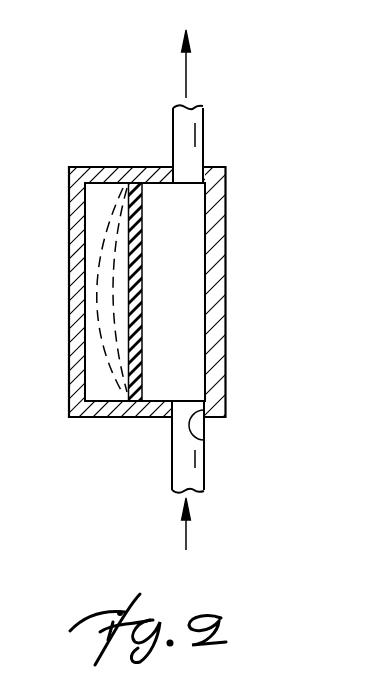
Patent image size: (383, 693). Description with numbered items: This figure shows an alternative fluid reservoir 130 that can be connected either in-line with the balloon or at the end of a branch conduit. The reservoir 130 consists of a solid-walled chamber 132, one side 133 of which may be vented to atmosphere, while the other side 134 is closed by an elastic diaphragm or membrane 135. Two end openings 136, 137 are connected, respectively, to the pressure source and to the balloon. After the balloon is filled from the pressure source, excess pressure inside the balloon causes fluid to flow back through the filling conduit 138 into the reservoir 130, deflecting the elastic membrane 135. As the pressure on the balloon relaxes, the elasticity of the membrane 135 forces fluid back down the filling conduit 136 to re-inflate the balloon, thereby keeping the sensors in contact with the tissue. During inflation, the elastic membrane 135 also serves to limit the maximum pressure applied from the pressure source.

The fluid reservoir 130 is at (235, 210).
The solid-walled chamber 132 is at (134, 410).
The vented side of chamber 133 is at (101, 197).
The membrane-closed side of chamber 134 is at (185, 320).
The elastic diaphragm or membrane 135 is at (138, 260).
The end opening 136 is at (200, 438).
The end opening 137 is at (190, 178).
The filling conduit 138 is at (173, 118).